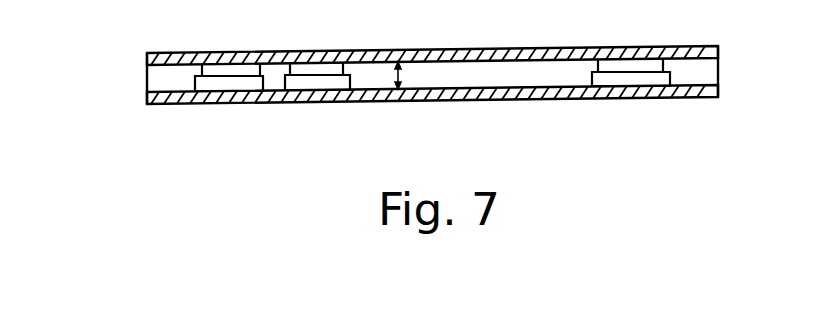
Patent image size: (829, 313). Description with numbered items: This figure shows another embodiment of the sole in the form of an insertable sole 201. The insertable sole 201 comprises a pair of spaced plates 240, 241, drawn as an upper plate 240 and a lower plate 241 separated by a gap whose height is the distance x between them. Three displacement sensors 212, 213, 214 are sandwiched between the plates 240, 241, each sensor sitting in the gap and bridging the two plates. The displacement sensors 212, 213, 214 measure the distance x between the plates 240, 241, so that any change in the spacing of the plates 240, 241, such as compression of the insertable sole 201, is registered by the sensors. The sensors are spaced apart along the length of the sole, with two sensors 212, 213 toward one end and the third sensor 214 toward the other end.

The insertable sole 201 is at (379, 81).
The plate 240 is at (462, 58).
The plate 241 is at (477, 95).
The displacement sensor 212 is at (230, 87).
The displacement sensor 213 is at (332, 83).
The displacement sensor 214 is at (628, 80).